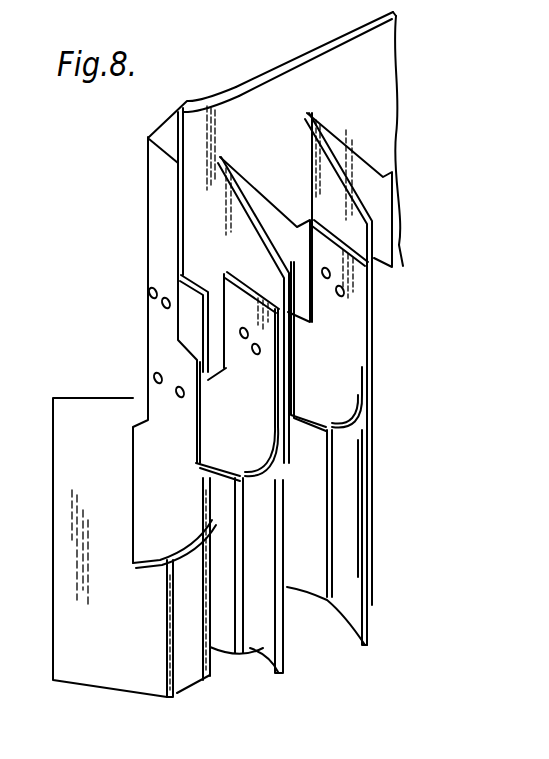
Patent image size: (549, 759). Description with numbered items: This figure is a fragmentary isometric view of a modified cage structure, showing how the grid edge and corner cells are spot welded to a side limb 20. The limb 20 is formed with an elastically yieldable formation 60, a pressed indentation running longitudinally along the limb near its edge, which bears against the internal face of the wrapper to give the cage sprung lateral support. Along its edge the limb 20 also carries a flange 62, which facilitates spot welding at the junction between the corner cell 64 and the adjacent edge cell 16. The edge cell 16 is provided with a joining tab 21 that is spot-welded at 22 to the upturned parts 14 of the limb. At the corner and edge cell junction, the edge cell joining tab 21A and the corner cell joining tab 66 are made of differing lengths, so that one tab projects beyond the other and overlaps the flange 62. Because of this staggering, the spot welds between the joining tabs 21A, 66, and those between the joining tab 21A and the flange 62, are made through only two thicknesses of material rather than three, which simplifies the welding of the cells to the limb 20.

The upturned parts 14 is at (290, 283).
The edge cells 16 is at (248, 650).
The side limb 20 is at (382, 89).
The joining tab 21 is at (357, 268).
The edge cell joining tab 21A is at (192, 312).
The spot welds 22 is at (326, 281).
The elastically yieldable formation 60 is at (190, 103).
The flange 62 is at (165, 202).
The corner cell 64 is at (64, 581).
The corner cell joining tab 66 is at (162, 396).